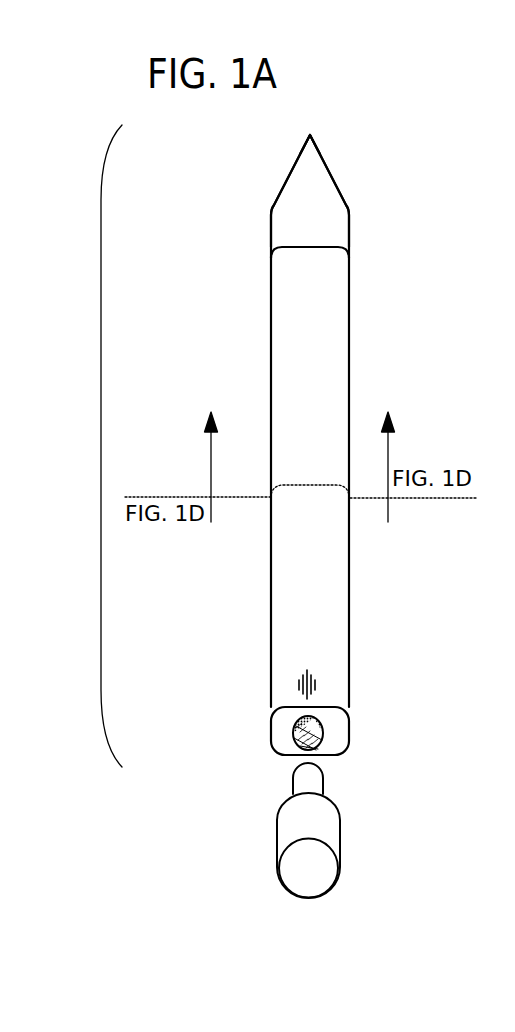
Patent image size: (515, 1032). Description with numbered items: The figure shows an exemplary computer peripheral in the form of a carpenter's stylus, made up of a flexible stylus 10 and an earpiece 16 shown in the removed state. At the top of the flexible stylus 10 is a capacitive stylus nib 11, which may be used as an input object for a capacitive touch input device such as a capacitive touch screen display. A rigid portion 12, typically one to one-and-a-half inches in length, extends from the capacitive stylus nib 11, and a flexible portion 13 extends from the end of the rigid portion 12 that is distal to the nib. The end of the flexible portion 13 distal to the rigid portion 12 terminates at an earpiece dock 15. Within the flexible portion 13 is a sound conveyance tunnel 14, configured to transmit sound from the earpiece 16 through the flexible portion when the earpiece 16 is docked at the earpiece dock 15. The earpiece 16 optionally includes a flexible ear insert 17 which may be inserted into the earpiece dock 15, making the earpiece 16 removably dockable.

The flexible stylus 10 is at (101, 448).
The capacitive stylus nib 11 is at (307, 143).
The rigid portion 12 is at (302, 214).
The flexible portion 13 is at (302, 317).
The sound conveyance tunnel 14 is at (300, 670).
The earpiece dock 15 is at (328, 742).
The earpiece 16 is at (347, 825).
The flexible ear insert 17 is at (327, 788).